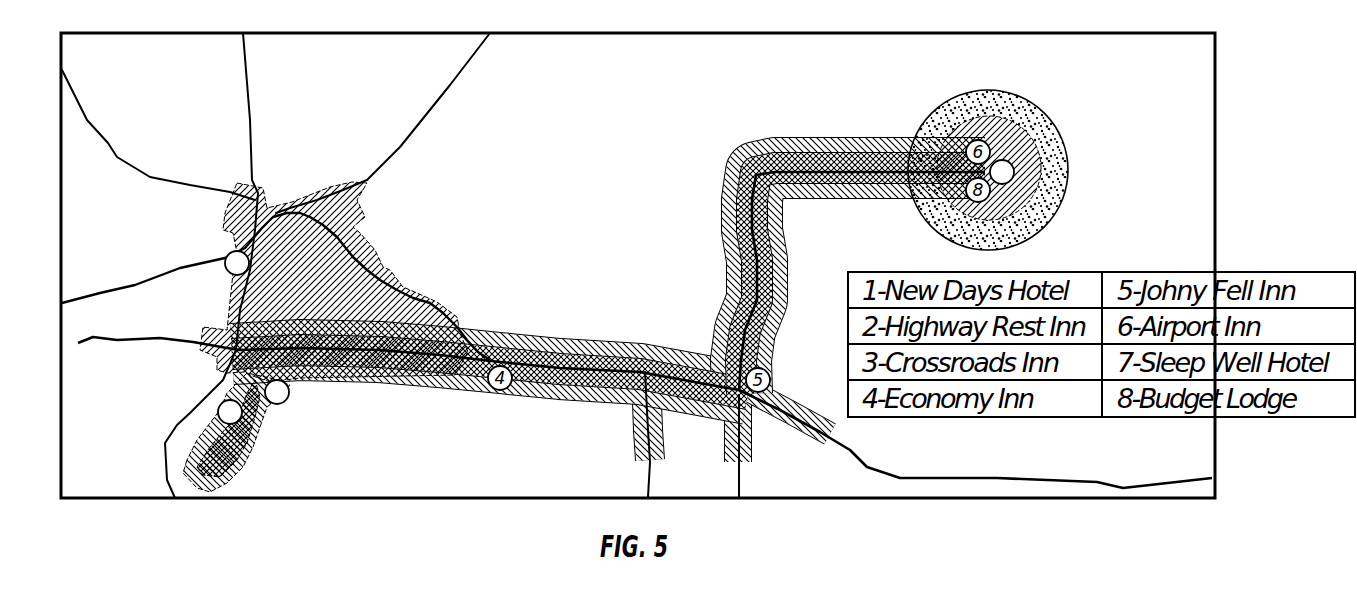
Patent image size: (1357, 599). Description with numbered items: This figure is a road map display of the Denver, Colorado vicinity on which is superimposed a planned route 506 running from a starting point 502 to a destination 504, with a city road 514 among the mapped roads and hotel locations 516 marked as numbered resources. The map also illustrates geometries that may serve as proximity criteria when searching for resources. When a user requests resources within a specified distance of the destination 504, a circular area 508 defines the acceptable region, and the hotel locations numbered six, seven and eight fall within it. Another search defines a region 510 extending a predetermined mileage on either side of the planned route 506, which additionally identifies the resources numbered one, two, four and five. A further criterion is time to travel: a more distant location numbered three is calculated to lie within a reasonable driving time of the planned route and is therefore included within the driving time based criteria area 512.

The starting point 502 is at (222, 458).
The destination 504 is at (963, 181).
The planned route 506 is at (372, 352).
The circular area 508 is at (1009, 92).
The region 510 is at (801, 136).
The driving time based criteria area 512 is at (406, 289).
The city road 514 is at (357, 256).
The hotel locations 516 is at (219, 406).